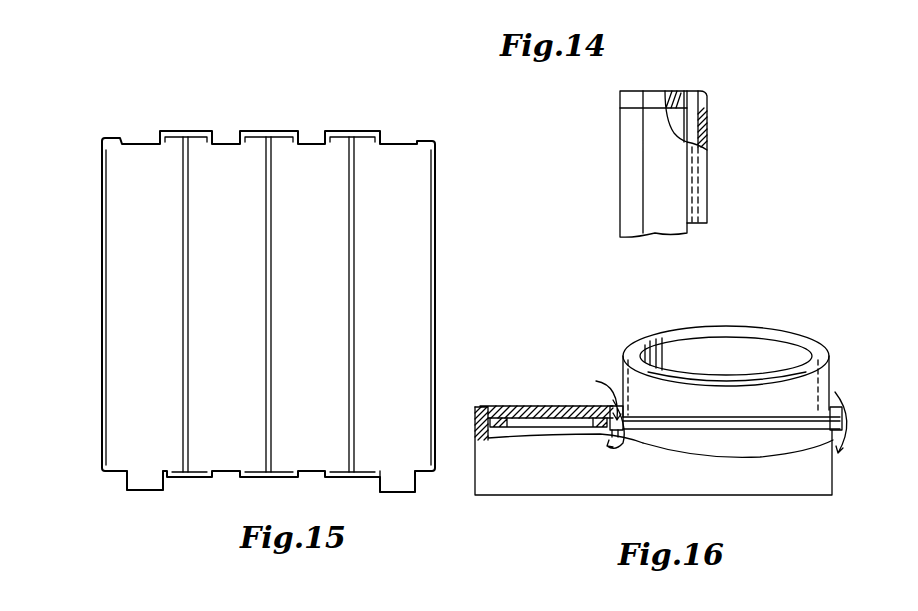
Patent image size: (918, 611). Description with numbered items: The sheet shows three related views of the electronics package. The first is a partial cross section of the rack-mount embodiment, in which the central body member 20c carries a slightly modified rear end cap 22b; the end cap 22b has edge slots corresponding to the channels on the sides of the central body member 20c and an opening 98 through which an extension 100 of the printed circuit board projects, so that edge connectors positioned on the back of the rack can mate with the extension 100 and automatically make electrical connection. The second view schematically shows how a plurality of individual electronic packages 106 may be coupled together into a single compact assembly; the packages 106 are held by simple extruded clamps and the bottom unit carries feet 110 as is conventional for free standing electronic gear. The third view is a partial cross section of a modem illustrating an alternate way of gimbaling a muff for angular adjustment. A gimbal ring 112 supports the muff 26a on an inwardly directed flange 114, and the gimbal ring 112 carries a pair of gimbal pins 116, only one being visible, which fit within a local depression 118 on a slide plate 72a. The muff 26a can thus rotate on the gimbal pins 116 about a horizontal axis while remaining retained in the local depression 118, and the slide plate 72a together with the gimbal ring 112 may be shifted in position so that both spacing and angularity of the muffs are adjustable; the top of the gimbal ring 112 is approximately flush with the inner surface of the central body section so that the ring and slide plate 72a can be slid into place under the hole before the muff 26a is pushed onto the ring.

In FIG. 15, the individual electronic package 106 is at (108, 241).
In FIG. 15, the mounting tab 110 is at (140, 483).
In FIG. 14, the central body member 20c is at (625, 160).
In FIG. 14, the end cap 22b is at (627, 100).
In FIG. 14, the opening 98 is at (665, 91).
In FIG. 14, the extension of the printed circuit board 100 is at (678, 91).
In FIG. 16, the slide plate 72a is at (528, 418).
In FIG. 16, the muff 26a is at (630, 343).
In FIG. 16, the gimbal ring 112 is at (832, 455).
In FIG. 16, the inwardly directed flange 114 is at (643, 412).
In FIG. 16, the gimbal pin 116 is at (603, 421).
In FIG. 16, the local depression 118 is at (612, 430).